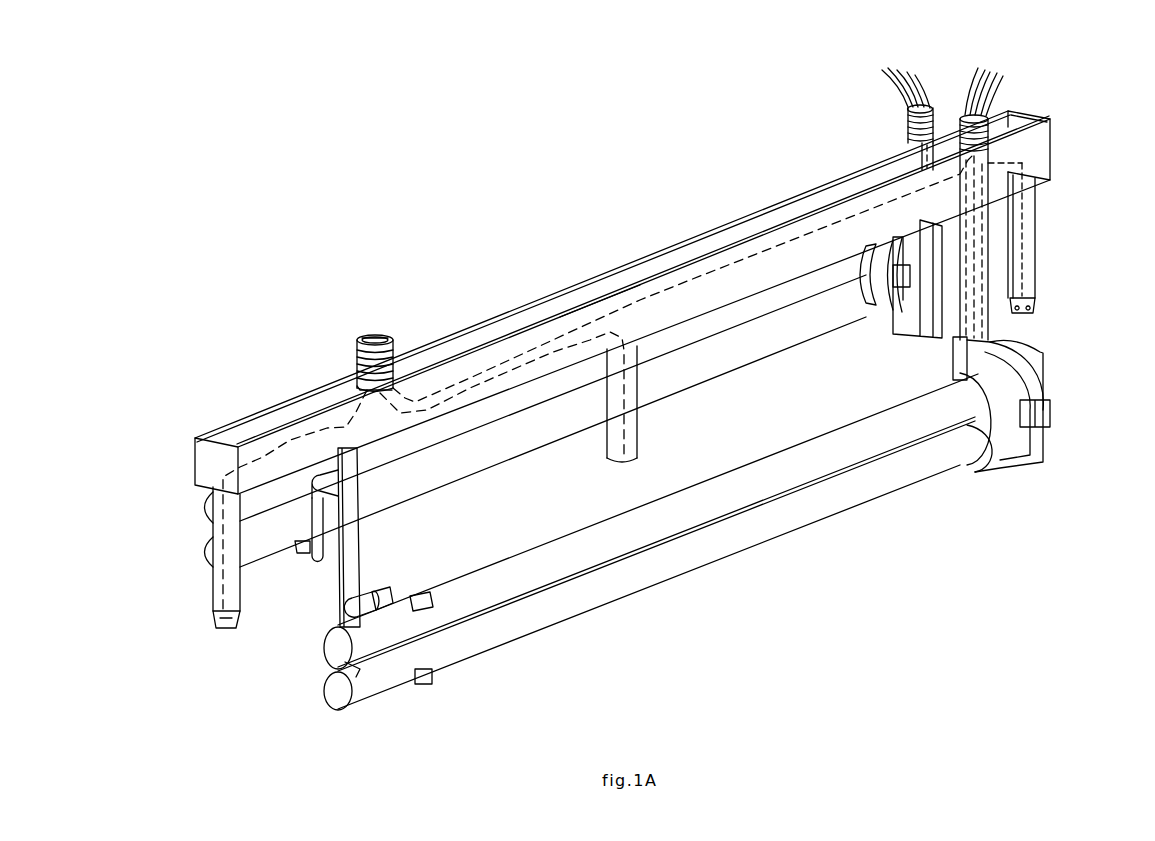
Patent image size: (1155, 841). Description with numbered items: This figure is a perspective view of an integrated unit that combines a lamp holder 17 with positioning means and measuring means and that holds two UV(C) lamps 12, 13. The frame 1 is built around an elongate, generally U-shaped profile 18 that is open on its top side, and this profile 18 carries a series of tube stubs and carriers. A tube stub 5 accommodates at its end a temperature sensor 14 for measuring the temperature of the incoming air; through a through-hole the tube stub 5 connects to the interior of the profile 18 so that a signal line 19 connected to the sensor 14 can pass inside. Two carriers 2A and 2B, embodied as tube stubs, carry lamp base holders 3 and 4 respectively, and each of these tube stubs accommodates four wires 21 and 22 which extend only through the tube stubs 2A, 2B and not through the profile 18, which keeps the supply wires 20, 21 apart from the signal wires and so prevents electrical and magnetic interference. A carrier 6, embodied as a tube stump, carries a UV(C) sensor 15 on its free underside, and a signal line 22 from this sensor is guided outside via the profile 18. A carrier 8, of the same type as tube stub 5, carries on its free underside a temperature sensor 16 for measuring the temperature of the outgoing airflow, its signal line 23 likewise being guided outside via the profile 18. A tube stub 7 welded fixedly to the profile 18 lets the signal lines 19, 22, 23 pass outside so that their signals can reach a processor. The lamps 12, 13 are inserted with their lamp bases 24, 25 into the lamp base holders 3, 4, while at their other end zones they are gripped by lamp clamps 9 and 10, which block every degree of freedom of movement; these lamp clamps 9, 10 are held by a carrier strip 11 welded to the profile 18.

The frame 1 is at (585, 286).
The carrier 2A is at (914, 145).
The carrier 2B is at (963, 192).
The lamp base holder 3 is at (1028, 377).
The lamp base holder 4 is at (912, 257).
The tube stub 5 is at (1028, 237).
The carrier 6 is at (612, 383).
The tube stub 7 is at (356, 363).
The carrier 8 is at (215, 531).
The lamp clamp 9 is at (342, 625).
The lamp clamp 10 is at (306, 549).
The carrier strip 11 is at (346, 575).
The lamp 12 is at (883, 480).
The lamp 13 is at (763, 344).
The temperature sensor 14 is at (1030, 312).
The UV(C) sensor 15 is at (617, 462).
The temperature sensor 16 is at (218, 622).
The lamp holder 17 is at (639, 212).
The profile 18 is at (450, 345).
The signal line 19 is at (381, 337).
The supply wires 20 is at (998, 90).
The wires 21 is at (908, 73).
The signal line 22 is at (377, 337).
The signal line 23 is at (362, 338).
The lamp base 24 is at (1008, 440).
The lamp base 25 is at (875, 280).